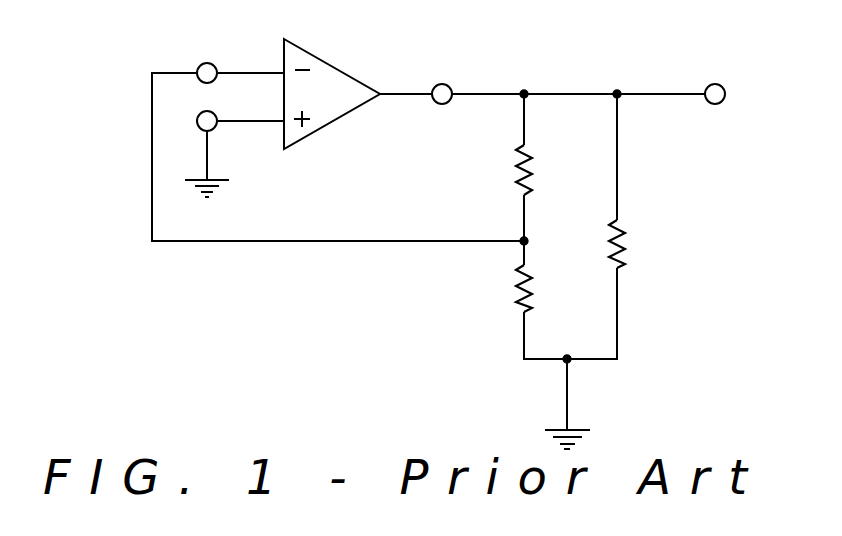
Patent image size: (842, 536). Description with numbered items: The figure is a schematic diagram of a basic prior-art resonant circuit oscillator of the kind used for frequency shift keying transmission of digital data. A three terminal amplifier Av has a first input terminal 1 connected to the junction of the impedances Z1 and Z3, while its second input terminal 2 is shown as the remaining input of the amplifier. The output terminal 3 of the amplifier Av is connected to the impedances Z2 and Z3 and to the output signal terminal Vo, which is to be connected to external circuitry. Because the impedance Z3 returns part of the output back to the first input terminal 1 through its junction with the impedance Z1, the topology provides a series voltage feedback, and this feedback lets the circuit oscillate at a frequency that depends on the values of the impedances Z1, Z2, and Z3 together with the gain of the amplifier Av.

The first input terminal 1 is at (207, 57).
The non-inverting input terminal 2 is at (192, 123).
The output terminal 3 is at (442, 78).
The three terminal amplifier Av is at (332, 94).
The output signal terminal Vo is at (712, 76).
The impedance Z1 is at (542, 288).
The impedance Z2 is at (639, 244).
The impedance Z3 is at (542, 170).